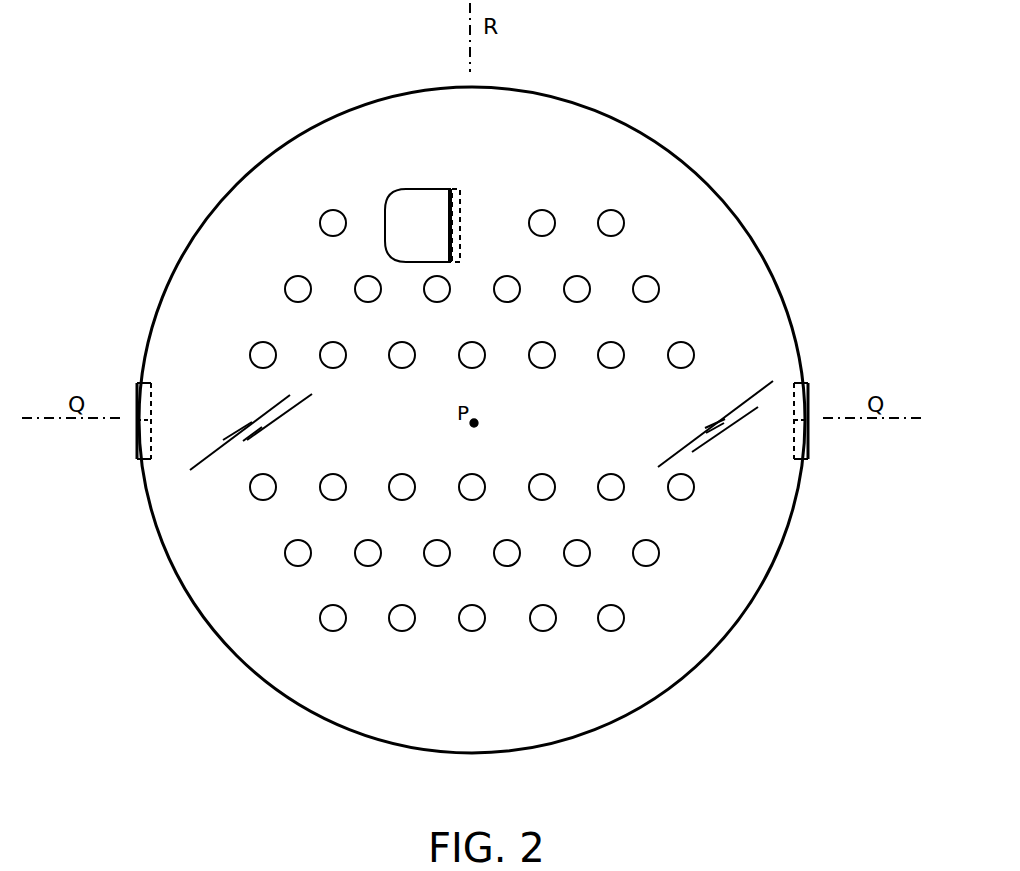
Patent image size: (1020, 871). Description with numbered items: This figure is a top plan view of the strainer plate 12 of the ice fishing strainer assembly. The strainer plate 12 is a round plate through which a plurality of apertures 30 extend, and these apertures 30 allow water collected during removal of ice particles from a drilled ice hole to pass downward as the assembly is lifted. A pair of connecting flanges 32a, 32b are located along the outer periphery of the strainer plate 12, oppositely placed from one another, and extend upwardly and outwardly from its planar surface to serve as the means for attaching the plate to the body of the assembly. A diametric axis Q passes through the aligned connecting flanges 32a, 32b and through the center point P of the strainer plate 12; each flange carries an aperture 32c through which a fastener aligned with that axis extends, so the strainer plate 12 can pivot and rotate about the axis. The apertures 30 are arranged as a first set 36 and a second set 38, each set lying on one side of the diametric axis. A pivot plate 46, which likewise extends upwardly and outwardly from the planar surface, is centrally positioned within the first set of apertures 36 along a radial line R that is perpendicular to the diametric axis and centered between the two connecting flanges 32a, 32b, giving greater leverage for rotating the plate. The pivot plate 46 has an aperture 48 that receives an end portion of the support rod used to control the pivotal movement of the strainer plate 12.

The strainer plate 12 is at (590, 434).
The apertures 30 is at (322, 215).
The connecting flange 32a is at (138, 460).
The connecting flange 32b is at (810, 392).
The aperture of the connecting flange 32c is at (137, 410).
The first set of apertures 36 is at (614, 210).
The second set of apertures 38 is at (553, 628).
The pivot plate 46 is at (452, 190).
The aperture 48 is at (460, 215).